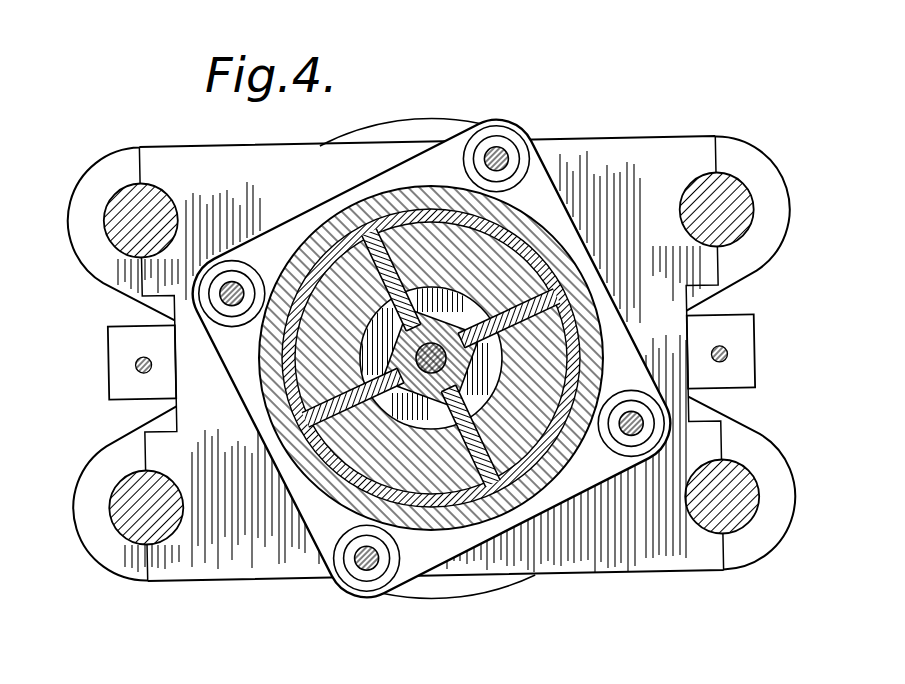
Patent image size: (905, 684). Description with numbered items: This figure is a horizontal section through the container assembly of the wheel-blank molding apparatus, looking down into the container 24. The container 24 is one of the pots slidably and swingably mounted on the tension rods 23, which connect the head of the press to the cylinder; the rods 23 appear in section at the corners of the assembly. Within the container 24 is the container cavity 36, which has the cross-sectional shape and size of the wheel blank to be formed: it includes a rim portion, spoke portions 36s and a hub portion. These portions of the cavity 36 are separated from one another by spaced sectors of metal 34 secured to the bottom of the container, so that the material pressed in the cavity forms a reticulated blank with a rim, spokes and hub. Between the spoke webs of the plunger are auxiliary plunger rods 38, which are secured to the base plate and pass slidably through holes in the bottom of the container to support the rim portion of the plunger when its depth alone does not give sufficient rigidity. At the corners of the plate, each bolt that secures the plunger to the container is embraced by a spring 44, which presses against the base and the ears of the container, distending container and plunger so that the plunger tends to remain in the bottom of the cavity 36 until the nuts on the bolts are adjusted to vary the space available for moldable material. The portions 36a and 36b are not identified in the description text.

The tension rods 23 is at (133, 244).
The container 24 is at (584, 290).
The spaced sectors of metal 34 is at (577, 470).
The container cavity 36 is at (327, 471).
The rotor blade 36a is at (358, 490).
The rotor hub 36b is at (393, 362).
The spoke portions 36s is at (466, 480).
The auxiliary plunger rods 38 is at (284, 283).
The spring 44 is at (466, 154).